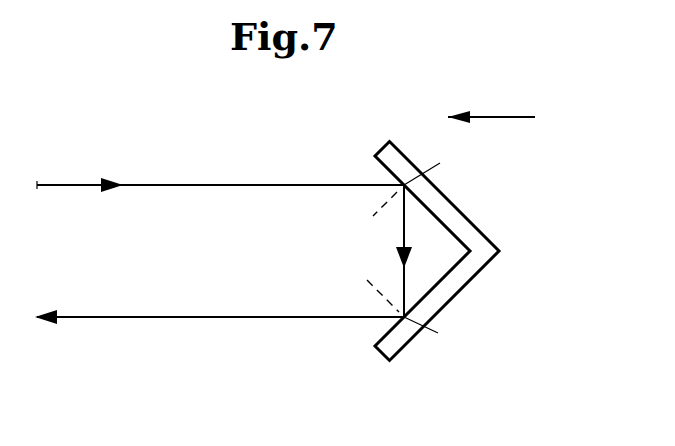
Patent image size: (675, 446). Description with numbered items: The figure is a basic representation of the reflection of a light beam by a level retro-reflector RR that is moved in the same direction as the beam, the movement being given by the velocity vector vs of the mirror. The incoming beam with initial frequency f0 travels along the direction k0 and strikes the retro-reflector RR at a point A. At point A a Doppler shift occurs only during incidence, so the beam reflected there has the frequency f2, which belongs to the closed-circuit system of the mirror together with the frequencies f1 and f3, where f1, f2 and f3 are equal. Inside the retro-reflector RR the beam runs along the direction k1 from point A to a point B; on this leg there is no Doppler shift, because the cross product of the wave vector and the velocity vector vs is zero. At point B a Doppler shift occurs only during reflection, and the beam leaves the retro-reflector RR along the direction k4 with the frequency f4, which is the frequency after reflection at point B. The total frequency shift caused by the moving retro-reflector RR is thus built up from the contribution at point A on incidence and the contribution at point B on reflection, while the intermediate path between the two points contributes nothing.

The retro-reflector RR is at (485, 247).
The initial frequency f0 is at (220, 175).
The direction of the incident beam k0 is at (78, 153).
The frequency in the closed-circuit system of the mirror f1 is at (415, 186).
The direction of the beam between reflections k1 is at (391, 211).
The frequency after reflection at point A f2 is at (383, 291).
The frequency in the closed-circuit system of the mirror f3 is at (431, 334).
The frequency after reflection at point B f4 is at (220, 307).
The direction of the returned beam k4 is at (78, 291).
The velocity vector of the mirror movement vs is at (496, 92).
The point A is at (420, 155).
The point B is at (418, 353).